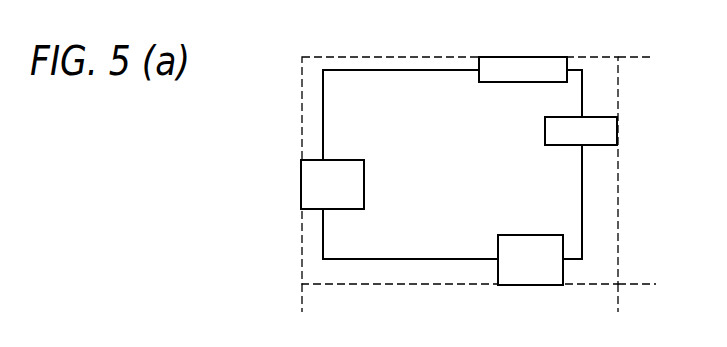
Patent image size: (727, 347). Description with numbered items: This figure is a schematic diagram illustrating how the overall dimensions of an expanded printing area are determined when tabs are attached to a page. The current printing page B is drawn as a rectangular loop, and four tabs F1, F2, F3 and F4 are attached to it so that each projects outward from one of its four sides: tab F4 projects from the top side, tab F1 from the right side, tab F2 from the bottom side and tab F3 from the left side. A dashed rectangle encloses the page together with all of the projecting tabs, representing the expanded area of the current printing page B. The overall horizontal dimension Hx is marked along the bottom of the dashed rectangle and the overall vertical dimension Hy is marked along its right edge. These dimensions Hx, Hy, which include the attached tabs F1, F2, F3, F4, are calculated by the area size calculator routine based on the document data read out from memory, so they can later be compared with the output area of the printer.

The current printing page B is at (361, 82).
The tab F1 is at (587, 121).
The tab F2 is at (553, 268).
The tab F3 is at (307, 187).
The tab F4 is at (523, 63).
The overall horizontal dimension Hx is at (609, 300).
The overall vertical dimension Hy is at (639, 66).